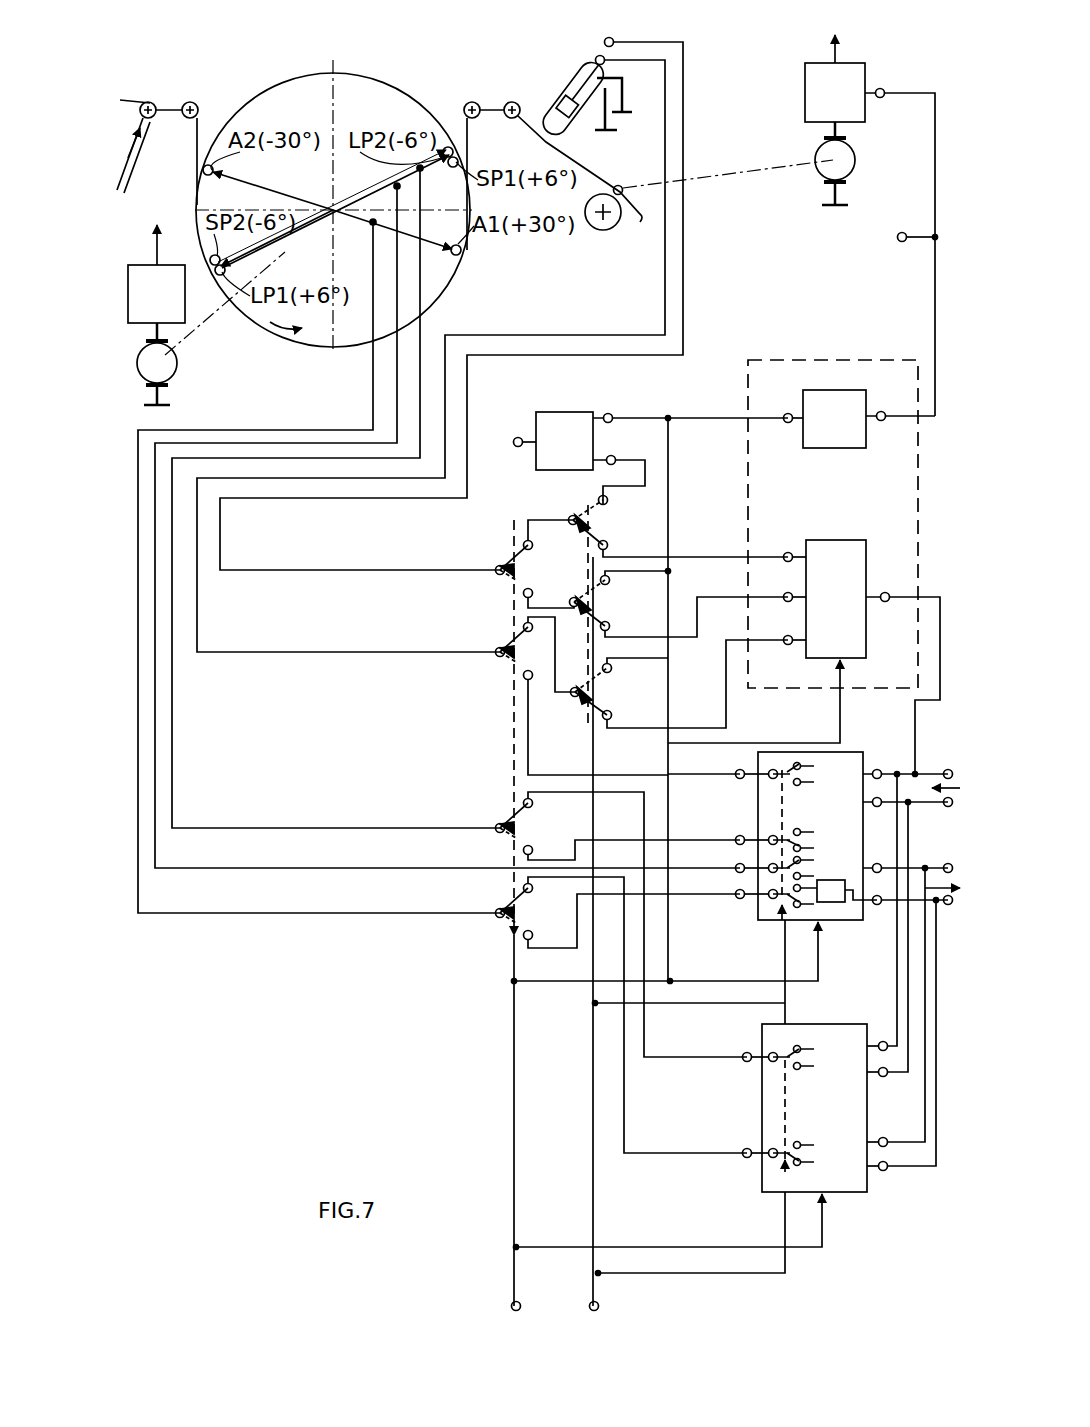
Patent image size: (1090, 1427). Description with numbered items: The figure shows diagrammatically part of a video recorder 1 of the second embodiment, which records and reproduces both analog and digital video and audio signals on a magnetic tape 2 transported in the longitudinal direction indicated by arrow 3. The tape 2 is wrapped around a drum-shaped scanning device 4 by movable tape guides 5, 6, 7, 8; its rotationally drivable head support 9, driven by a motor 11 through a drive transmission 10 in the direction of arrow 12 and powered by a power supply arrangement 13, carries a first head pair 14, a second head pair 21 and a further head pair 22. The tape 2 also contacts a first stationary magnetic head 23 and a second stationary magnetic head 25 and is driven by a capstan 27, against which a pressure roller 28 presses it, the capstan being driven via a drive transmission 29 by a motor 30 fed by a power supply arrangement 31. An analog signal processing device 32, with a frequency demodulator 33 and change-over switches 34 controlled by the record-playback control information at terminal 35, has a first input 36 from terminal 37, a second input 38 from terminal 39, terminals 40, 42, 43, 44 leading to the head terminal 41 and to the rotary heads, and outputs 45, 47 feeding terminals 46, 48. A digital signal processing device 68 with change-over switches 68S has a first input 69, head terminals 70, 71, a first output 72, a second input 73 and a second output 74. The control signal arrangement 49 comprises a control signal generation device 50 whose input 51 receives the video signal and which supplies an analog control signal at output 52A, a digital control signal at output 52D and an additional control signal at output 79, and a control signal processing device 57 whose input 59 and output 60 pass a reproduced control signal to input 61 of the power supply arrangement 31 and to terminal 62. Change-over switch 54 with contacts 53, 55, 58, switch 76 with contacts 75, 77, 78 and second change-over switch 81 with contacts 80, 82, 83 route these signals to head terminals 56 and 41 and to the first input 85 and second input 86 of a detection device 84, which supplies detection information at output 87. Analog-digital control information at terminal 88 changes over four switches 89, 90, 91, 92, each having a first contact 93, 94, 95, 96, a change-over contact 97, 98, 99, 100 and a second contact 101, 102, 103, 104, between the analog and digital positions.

The video recorder 1 is at (352, 990).
The magnetic tape 2 is at (145, 156).
The arrow 3 is at (130, 132).
The drum-shaped scanning device 4 is at (351, 72).
The movable tape guide 5 is at (152, 102).
The movable tape guide 6 is at (194, 104).
The movable tape guide 7 is at (471, 102).
The movable tape guide 8 is at (511, 102).
The rotationally drivable head support 9 is at (294, 100).
The drive transmission 10 is at (194, 345).
The motor 11 is at (172, 368).
The arrow 12 is at (288, 330).
The power supply arrangement 13 is at (174, 288).
The first head pair 14 is at (205, 260).
The second head pair 21 is at (449, 146).
The further head pair 22 is at (462, 252).
The first stationary magnetic head 23 is at (544, 136).
The second stationary magnetic head 25 is at (553, 100).
The capstan 27 is at (620, 186).
The pressure roller 28 is at (612, 226).
The drive transmission 29 is at (706, 174).
The motor 30 is at (820, 164).
The power supply arrangement 31 is at (810, 96).
The signal processing device 32 is at (829, 823).
The frequency demodulator 33 is at (832, 904).
The change-over switches 34 is at (800, 838).
The terminal 35 is at (598, 1310).
The first input 36 is at (878, 770).
The terminal 37 is at (948, 770).
The second input 38 is at (877, 806).
The terminal 39 is at (948, 806).
The first terminal 40 is at (740, 774).
The terminal 41 is at (595, 60).
The second terminal 42 is at (740, 836).
The third terminal 43 is at (740, 868).
The fourth terminal 44 is at (740, 894).
The first output 45 is at (886, 862).
The terminal 46 is at (948, 864).
The second output 47 is at (877, 904).
The further terminal 48 is at (948, 904).
The control signal arrangement 49 is at (818, 358).
The control signal generation device 50 is at (830, 544).
The input 51 is at (884, 592).
The output 52A is at (794, 580).
The first output 52D is at (784, 636).
The first contact 53 is at (610, 626).
The change-over switch 54 is at (670, 619).
The change-over contact 55 is at (572, 600).
The terminal 56 is at (610, 38).
The control signal processing device 57 is at (836, 448).
The second contact 58 is at (610, 580).
The input 59 is at (786, 414).
The output 60 is at (882, 412).
The input 61 is at (882, 88).
The terminal 62 is at (900, 234).
The signal processing device 68 is at (820, 1120).
The change-over switches 68S is at (792, 1086).
The first input 69 is at (882, 1042).
The first terminal 70 is at (746, 1052).
The second terminal 71 is at (746, 1148).
The first output 72 is at (884, 1138).
The second input 73 is at (884, 1076).
The second output 74 is at (884, 1170).
The first contact 75 is at (612, 716).
The change-over switch 76 is at (672, 693).
The change-over contact 77 is at (576, 698).
The second contact 78 is at (612, 669).
The second output 79 is at (784, 556).
The first contact 80 is at (608, 546).
The second change-over switch 81 is at (650, 893).
The change-over contact 82 is at (572, 522).
The second contact 83 is at (608, 500).
The detection device 84 is at (556, 424).
The first input 85 is at (610, 414).
The second input 86 is at (614, 458).
The output 87 is at (514, 442).
The terminal 88 is at (510, 1310).
The change-over switch 89 is at (596, 1012).
The change-over switch 90 is at (593, 912).
The change-over switch 91 is at (558, 696).
The change-over switch 92 is at (502, 565).
The first contact 93 is at (524, 940).
The first contact 94 is at (532, 850).
The first contact 95 is at (528, 680).
The first contact 96 is at (524, 593).
The change-over contact 97 is at (496, 914).
The change-over contact 98 is at (500, 832).
The change-over contact 99 is at (496, 652).
The change-over contact 100 is at (496, 570).
The second contact 101 is at (524, 889).
The second contact 102 is at (526, 800).
The second contact 103 is at (524, 627).
The second contact 104 is at (524, 544).